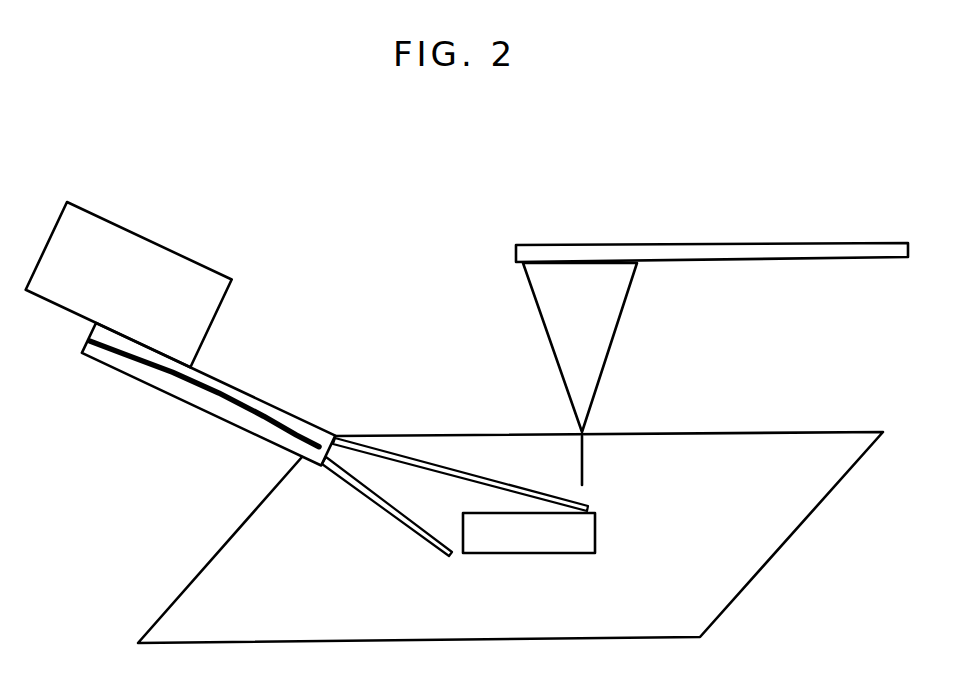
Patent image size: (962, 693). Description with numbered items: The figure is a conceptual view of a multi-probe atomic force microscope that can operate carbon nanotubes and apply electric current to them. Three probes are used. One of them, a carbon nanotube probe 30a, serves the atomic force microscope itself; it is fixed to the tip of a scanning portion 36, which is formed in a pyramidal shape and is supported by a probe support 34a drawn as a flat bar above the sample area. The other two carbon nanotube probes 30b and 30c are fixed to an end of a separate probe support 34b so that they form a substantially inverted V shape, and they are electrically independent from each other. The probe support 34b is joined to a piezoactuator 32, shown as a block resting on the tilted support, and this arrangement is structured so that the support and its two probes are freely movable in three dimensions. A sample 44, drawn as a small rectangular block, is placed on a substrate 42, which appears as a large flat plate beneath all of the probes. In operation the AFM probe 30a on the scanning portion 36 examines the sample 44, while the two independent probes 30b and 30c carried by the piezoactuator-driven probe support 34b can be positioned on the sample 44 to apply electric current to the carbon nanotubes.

The piezoactuator 32 is at (173, 248).
The probe support 34a is at (790, 243).
The probe support 34b is at (245, 393).
The scanning portion 36 is at (623, 300).
The carbon nanotube probe 30a is at (583, 455).
The carbon nanotube probe 30b is at (368, 495).
The carbon nanotube probe 30c is at (392, 452).
The substrate 42 is at (763, 545).
The sample 44 is at (557, 557).